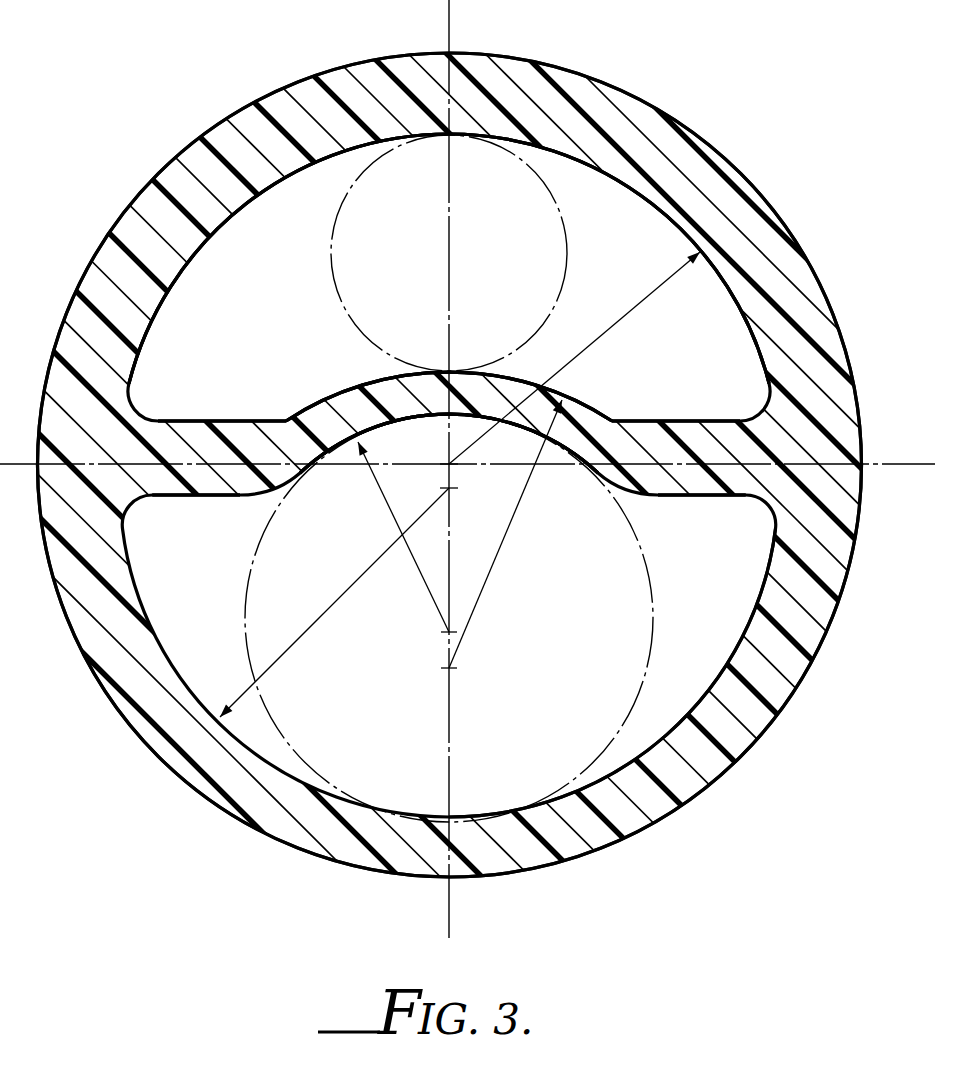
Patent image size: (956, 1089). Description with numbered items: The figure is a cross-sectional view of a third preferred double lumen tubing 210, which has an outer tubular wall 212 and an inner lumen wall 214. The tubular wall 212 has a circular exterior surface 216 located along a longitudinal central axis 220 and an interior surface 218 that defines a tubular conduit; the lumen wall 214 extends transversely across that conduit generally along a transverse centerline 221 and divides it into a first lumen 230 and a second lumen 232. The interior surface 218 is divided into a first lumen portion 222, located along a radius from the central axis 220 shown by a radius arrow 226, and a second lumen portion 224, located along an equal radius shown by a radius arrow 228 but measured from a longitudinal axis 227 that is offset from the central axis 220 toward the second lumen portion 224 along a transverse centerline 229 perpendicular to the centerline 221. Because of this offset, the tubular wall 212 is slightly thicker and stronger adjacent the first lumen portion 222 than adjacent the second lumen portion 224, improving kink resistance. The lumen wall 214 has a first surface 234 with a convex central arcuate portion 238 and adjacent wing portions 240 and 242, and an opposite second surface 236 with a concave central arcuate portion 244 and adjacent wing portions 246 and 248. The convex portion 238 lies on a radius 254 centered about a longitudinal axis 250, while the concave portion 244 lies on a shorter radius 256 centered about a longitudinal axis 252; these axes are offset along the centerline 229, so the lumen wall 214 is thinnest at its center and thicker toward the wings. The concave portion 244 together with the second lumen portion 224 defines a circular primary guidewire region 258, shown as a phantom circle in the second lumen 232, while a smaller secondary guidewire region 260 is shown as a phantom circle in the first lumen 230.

The double lumen tubing 210 is at (237, 60).
The outer tubular wall 212 is at (478, 544).
The inner lumen wall 214 is at (448, 458).
The exterior surface 216 is at (182, 140).
The interior surface 218 is at (175, 287).
The longitudinal central axis 220 is at (448, 463).
The transverse centerline 221 is at (887, 463).
The first lumen portion 222 is at (690, 225).
The second lumen portion 224 is at (752, 620).
The radius arrow 226 is at (634, 310).
The longitudinal axis 227 is at (443, 488).
The radius arrow 228 is at (290, 648).
The transverse centerline 229 is at (452, 893).
The first lumen 230 is at (449, 277).
The second lumen 232 is at (448, 615).
The first surface 234 is at (590, 397).
The second surface 236 is at (598, 472).
The convex central arcuate portion 238 is at (345, 392).
The wing portion 240 is at (218, 420).
The wing portion 242 is at (686, 420).
The concave central arcuate portion 244 is at (320, 457).
The wing portion 246 is at (177, 497).
The wing portion 248 is at (697, 497).
The longitudinal axis 250 is at (452, 670).
The longitudinal axis 252 is at (443, 632).
The radius 254 is at (505, 537).
The radius 256 is at (428, 594).
The primary guidewire region 258 is at (662, 643).
The secondary guidewire region 260 is at (565, 217).